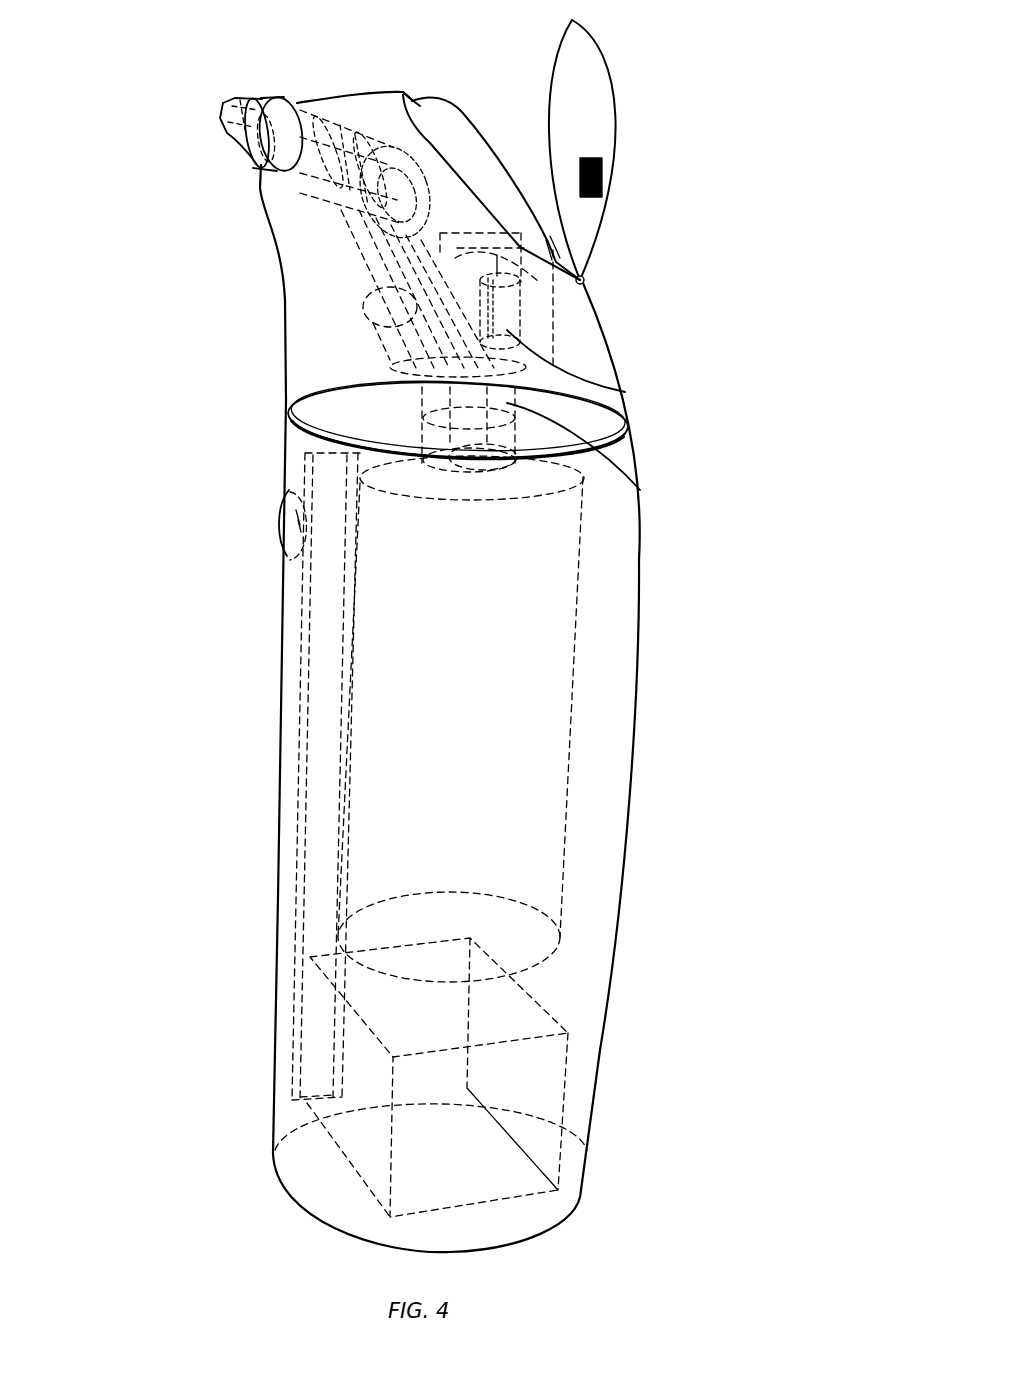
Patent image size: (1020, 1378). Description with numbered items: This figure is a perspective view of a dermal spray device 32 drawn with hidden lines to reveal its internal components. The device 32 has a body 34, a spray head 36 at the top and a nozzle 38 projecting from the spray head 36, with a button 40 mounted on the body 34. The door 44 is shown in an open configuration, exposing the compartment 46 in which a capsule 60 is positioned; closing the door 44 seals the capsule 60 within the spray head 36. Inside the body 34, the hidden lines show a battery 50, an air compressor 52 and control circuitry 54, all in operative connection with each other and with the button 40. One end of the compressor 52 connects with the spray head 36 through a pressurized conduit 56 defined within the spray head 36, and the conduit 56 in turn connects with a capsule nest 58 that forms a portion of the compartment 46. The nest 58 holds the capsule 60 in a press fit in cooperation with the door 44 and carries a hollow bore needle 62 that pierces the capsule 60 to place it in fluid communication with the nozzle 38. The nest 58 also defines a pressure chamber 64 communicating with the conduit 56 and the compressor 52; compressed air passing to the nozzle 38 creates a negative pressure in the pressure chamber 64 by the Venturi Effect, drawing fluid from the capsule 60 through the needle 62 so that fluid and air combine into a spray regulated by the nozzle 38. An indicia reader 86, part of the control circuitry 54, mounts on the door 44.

The dermal spray device 32 is at (114, 138).
The body 34 is at (595, 848).
The spray head 36 is at (290, 313).
The nozzle 38 is at (247, 110).
The button 40 is at (278, 523).
The door 44 is at (602, 133).
The compartment 46 is at (404, 93).
The battery 50 is at (543, 1152).
The air compressor 52 is at (533, 913).
The control circuitry 54 is at (298, 878).
The pressurized conduit 56 is at (640, 490).
The capsule nest 58 is at (540, 323).
The capsule 60 is at (483, 153).
The needle 62 is at (503, 287).
The pressure chamber 64 is at (625, 393).
The indicia reader 86 is at (603, 190).